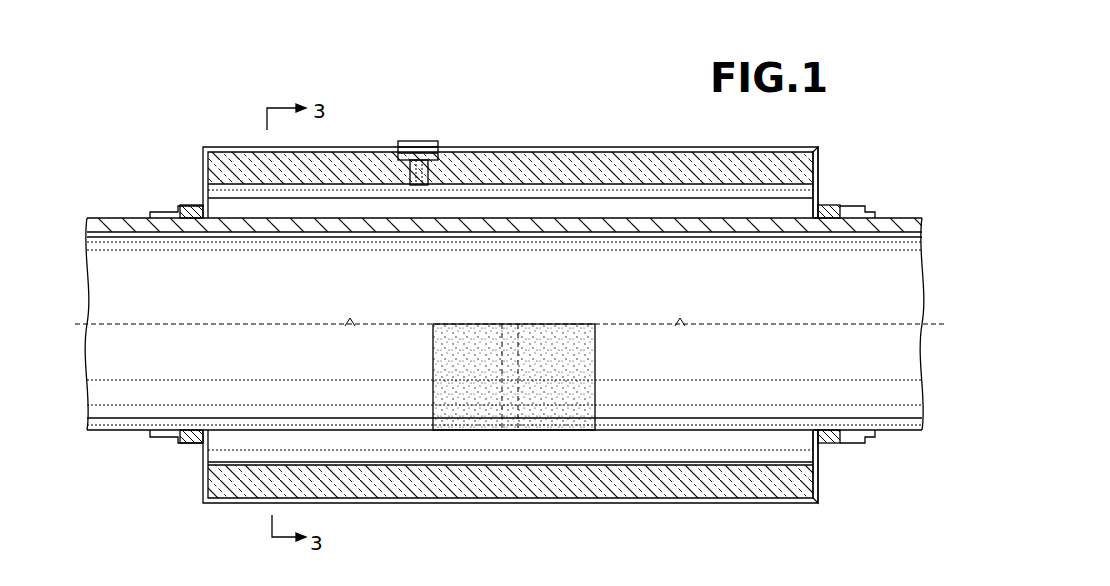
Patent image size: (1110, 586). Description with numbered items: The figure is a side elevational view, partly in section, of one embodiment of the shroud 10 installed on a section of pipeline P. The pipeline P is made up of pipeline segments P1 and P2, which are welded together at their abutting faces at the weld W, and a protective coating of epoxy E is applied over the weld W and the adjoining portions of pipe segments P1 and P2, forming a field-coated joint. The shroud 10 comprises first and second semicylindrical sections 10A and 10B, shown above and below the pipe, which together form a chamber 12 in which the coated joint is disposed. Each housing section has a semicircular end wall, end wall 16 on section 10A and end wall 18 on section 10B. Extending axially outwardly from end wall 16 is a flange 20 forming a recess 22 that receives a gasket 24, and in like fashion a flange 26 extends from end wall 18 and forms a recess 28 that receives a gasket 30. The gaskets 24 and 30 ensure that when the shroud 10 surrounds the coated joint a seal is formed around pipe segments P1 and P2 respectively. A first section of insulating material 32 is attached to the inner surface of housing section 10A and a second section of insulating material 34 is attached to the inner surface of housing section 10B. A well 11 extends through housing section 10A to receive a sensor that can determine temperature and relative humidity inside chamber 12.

The shroud 10 is at (506, 98).
The first semicylindrical section 10A is at (541, 127).
The second semicylindrical section 10B is at (549, 508).
The well 11 is at (423, 141).
The chamber 12 is at (640, 440).
The semicircular end wall 16 is at (818, 172).
The semicircular end wall 18 is at (820, 470).
The flange 20 is at (180, 205).
The recess 22 is at (833, 206).
The gasket 24 is at (192, 212).
The flange 26 is at (168, 437).
The recess 28 is at (832, 430).
The gasket 30 is at (190, 430).
The first section of insulating material 32 is at (350, 147).
The second section of insulating material 34 is at (400, 466).
The pipeline P is at (100, 446).
The pipeline segment P1 is at (127, 270).
The pipeline segment P2 is at (903, 282).
The epoxy E is at (445, 350).
The weld W is at (535, 362).